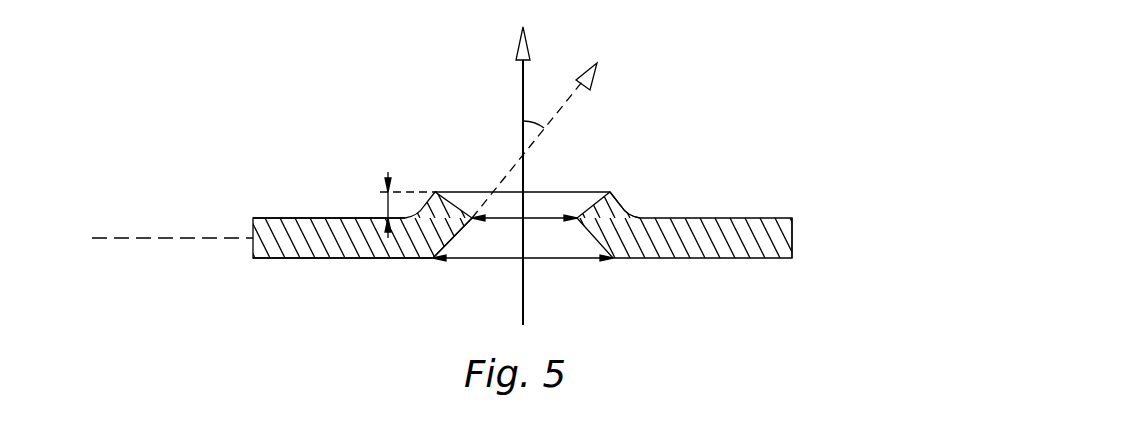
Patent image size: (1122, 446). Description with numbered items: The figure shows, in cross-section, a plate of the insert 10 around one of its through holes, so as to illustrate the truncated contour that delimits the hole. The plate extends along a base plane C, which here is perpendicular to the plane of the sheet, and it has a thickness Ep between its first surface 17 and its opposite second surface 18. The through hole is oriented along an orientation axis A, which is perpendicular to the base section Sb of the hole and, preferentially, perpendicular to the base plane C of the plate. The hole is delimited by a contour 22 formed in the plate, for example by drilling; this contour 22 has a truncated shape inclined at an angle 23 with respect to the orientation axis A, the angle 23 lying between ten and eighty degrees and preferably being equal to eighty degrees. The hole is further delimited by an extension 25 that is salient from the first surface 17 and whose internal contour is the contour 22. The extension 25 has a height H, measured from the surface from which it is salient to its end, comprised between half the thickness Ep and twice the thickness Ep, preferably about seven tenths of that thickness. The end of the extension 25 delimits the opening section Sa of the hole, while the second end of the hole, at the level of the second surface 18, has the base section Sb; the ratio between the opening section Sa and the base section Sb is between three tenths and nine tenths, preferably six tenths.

The insert 10 is at (723, 127).
The first surface 17 is at (312, 217).
The second surface 18 is at (345, 259).
The contour 22 is at (453, 237).
The angle 23 is at (531, 122).
The extension 25 is at (600, 212).
The orientation axis A is at (520, 75).
The height H is at (393, 202).
The opening section Sa is at (540, 214).
The base section Sb is at (562, 259).
The base plane C is at (123, 238).
The thickness Ep is at (793, 240).